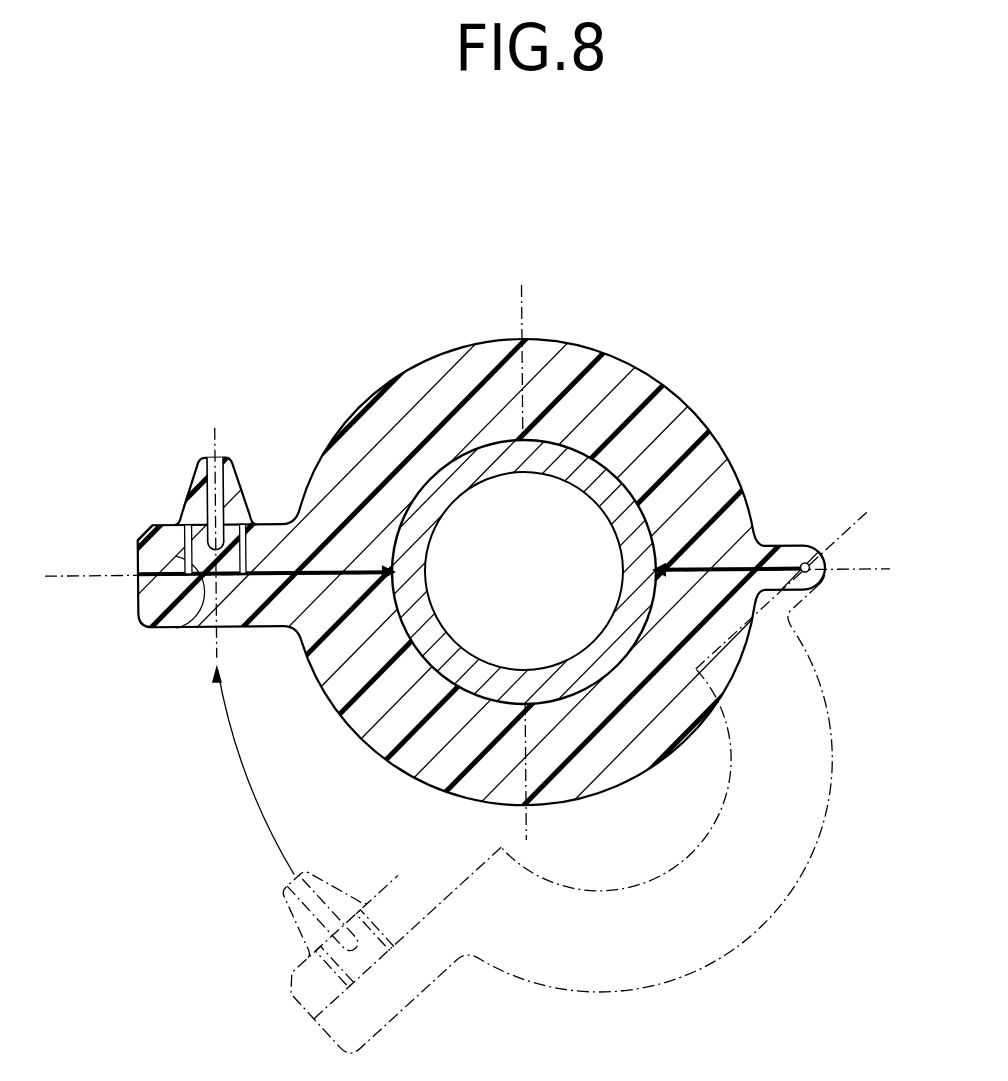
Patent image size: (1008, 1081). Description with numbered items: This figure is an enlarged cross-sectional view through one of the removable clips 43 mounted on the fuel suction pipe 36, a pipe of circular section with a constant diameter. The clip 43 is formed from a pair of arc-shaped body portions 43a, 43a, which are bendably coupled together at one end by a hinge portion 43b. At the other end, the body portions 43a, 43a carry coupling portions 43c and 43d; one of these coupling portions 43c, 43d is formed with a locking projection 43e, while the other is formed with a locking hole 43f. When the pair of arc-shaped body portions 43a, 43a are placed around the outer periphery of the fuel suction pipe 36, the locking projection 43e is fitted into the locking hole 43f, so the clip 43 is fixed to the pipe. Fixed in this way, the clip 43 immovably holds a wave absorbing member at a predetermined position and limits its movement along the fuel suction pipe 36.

The clip 43 is at (688, 378).
The arc-shaped body portion 43a is at (432, 373).
The hinge portion 43b is at (815, 546).
The coupling portion 43c is at (152, 605).
The coupling portion 43d is at (140, 548).
The locking projection 43e is at (230, 470).
The locking hole 43f is at (212, 592).
The fuel suction pipe 36 is at (517, 527).